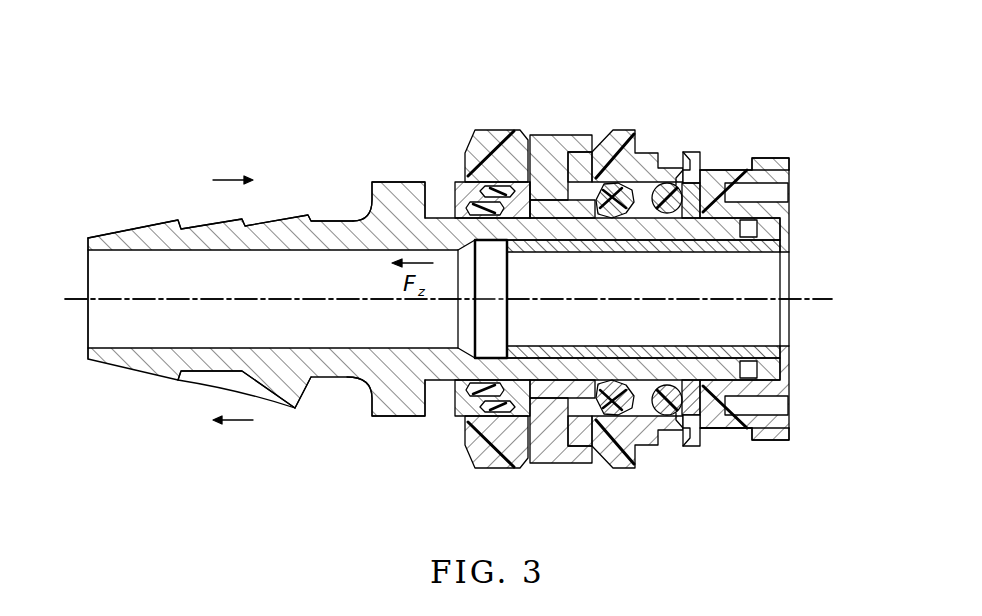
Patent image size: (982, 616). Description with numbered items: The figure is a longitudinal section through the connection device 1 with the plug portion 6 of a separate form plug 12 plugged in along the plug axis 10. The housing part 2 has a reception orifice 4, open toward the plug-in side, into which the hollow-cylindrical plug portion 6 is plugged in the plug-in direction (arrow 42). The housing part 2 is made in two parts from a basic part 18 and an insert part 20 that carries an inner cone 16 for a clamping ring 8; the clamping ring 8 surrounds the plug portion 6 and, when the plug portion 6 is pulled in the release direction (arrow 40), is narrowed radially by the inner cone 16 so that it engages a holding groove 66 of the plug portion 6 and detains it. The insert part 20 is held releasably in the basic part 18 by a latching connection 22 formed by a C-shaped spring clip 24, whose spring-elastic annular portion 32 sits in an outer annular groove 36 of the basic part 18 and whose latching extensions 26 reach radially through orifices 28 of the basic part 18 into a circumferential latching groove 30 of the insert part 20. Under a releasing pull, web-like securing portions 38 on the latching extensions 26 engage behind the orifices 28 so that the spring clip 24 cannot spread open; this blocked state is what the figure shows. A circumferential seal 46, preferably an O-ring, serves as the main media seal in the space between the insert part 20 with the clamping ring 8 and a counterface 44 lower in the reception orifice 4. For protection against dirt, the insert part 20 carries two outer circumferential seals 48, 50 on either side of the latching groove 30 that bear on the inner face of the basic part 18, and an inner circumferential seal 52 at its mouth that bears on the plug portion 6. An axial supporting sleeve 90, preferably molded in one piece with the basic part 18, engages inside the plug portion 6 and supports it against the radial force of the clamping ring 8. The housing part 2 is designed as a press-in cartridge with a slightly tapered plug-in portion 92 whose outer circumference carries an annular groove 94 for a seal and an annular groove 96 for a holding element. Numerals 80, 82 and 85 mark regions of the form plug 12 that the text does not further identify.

The connection device 1 is at (670, 69).
The housing part 2 is at (735, 426).
The reception orifice 4 is at (449, 385).
The plug portion 6 is at (648, 366).
The clamping ring 8 is at (655, 412).
The plug axis 10 is at (232, 297).
The form plug 12 is at (352, 378).
The inner cone 16 is at (567, 232).
The basic part 18 is at (495, 150).
The insert part 20 is at (455, 192).
The latching connection 22 is at (552, 207).
The spring clip 24 is at (563, 462).
The latching extensions 26 is at (548, 150).
The orifices 28 is at (578, 165).
The latching groove 30 is at (562, 203).
The annular portion 32 is at (605, 440).
The annular groove 36 is at (605, 160).
The securing portions 38 is at (510, 445).
The release direction 40 is at (240, 425).
The plug-in direction 42 is at (222, 178).
The counterface 44 is at (695, 162).
The circumferential seal 46 is at (715, 430).
The outer circumferential seal 48 is at (480, 430).
The outer circumferential seal 50 is at (562, 402).
The inner circumferential seal 52 is at (460, 400).
The holding groove 66 is at (605, 218).
The barb 80 is at (158, 223).
The fin 82 is at (295, 410).
The tube end 85 is at (103, 361).
The supporting sleeve 90 is at (712, 224).
The plug-in portion 92 is at (767, 160).
The annular groove 94 is at (690, 432).
The annular groove 96 is at (755, 432).